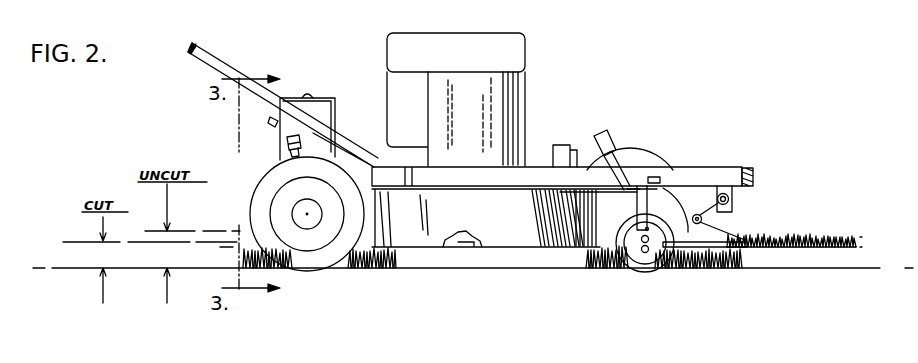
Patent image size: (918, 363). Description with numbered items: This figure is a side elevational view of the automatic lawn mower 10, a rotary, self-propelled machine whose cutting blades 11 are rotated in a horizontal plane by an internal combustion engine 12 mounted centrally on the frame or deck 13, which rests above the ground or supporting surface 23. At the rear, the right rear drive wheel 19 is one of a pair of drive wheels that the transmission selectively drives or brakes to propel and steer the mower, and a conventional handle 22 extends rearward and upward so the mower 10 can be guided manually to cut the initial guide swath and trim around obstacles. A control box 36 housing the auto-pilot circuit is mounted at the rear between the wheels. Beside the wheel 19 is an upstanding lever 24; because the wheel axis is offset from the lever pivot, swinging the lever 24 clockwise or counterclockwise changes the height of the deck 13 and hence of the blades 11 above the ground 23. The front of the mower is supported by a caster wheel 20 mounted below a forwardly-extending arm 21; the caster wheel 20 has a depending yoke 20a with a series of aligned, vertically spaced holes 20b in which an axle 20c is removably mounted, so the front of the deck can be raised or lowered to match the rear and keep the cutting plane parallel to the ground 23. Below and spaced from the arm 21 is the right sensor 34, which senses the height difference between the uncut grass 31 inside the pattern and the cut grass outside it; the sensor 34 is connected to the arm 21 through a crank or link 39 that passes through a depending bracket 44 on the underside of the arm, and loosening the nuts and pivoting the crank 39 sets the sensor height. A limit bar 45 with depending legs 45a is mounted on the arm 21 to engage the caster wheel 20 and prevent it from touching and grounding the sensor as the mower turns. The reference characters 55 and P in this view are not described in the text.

The automatic lawn mower 10 is at (475, 92).
The cutting blades 11 is at (470, 240).
The internal combustion engine 12 is at (517, 87).
The frame or deck 13 is at (412, 241).
The right rear drive wheel 19 is at (310, 265).
The caster wheel 20 is at (622, 262).
The depending yoke 20a is at (667, 207).
The vertically-spaced holes 20b is at (645, 253).
The axle 20c is at (643, 241).
The forwardly-extending arm 21 is at (683, 170).
The handle 22 is at (212, 57).
The ground or supporting surface 23 is at (527, 268).
The upstanding lever 24 is at (288, 145).
The uncut grass 31 is at (788, 235).
The right sensor 34 is at (740, 247).
The control box 36 is at (324, 100).
The crank or link 39 is at (712, 222).
The depending bracket 44 is at (733, 194).
The limit bar 45 is at (629, 176).
The depending legs 45a is at (648, 200).
The spring 55 is at (748, 167).
The filler cap P is at (306, 92).